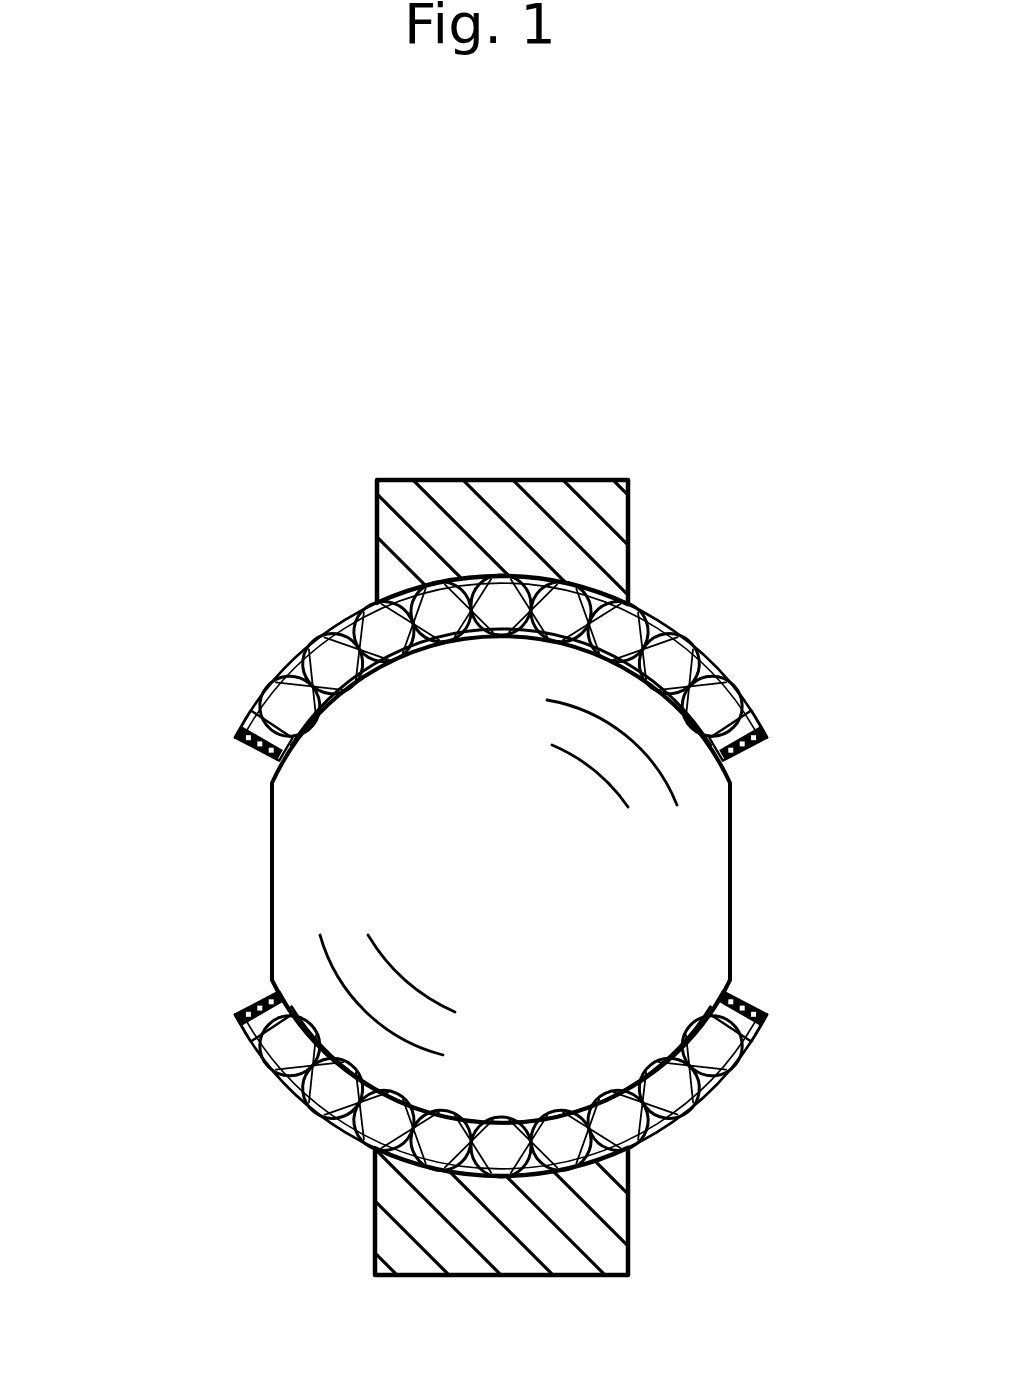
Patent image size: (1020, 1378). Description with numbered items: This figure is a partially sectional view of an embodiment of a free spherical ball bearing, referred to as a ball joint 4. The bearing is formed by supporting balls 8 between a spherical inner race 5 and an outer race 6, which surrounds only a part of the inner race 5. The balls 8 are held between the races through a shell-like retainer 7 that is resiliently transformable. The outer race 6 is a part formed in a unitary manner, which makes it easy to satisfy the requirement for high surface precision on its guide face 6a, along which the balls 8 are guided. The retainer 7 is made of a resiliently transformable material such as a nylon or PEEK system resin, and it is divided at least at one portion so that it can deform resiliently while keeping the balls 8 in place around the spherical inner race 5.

The ball joint 4 is at (820, 517).
The spherical inner race 5 is at (300, 825).
The outer race 6 is at (377, 512).
The guide face 6a is at (477, 600).
The retainer 7 is at (247, 720).
The balls 8 is at (310, 637).